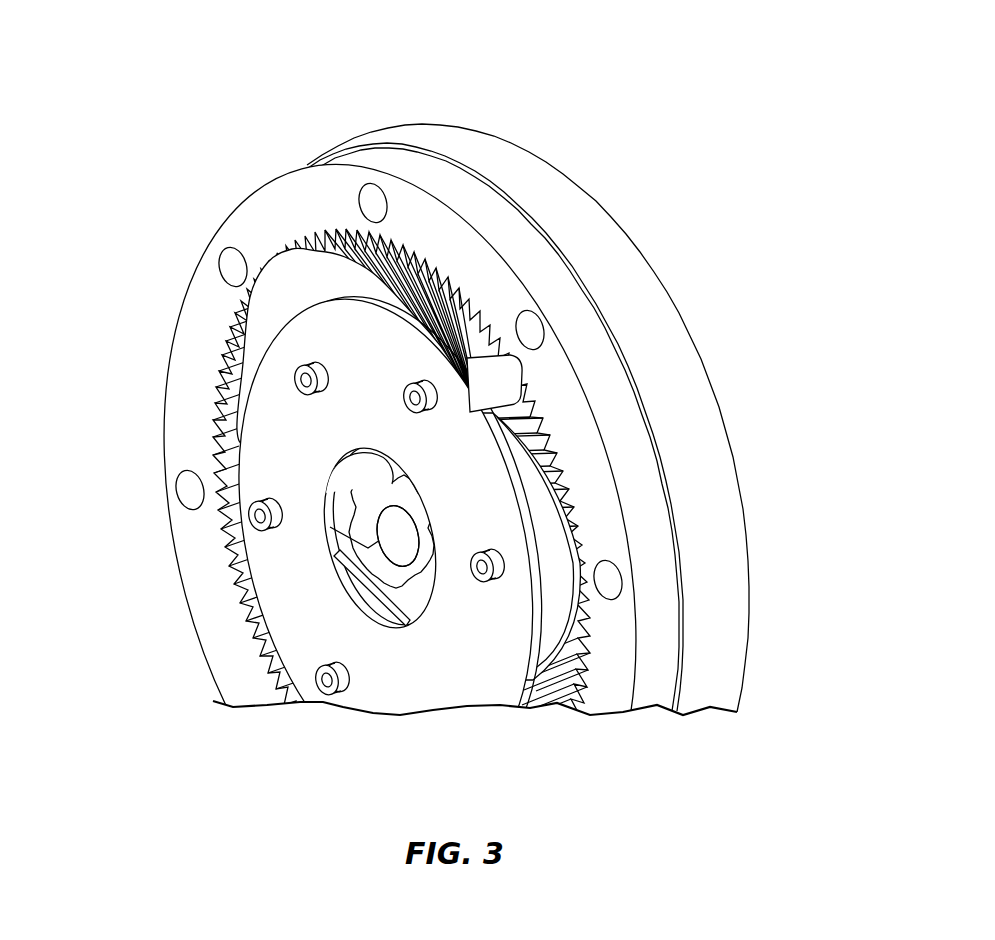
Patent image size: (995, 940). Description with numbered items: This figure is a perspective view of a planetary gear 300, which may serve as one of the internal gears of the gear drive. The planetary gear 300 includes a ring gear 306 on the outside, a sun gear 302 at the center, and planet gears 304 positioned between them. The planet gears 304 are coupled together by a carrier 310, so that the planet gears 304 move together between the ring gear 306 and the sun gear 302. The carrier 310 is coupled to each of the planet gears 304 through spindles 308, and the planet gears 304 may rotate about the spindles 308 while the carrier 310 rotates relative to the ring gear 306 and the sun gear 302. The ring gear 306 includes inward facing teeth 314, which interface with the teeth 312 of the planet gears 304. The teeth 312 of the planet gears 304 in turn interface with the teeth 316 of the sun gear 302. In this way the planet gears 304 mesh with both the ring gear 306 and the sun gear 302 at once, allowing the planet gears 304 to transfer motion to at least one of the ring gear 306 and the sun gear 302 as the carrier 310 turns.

The planetary gear 300 is at (578, 73).
The sun gear 302 is at (372, 538).
The planet gears 304 is at (283, 290).
The ring gear 306 is at (213, 400).
The spindles 308 is at (290, 368).
The carrier 310 is at (256, 455).
The teeth of the planet gears 312 is at (383, 283).
The inward facing teeth 314 is at (417, 243).
The teeth of the sun gear 316 is at (415, 470).